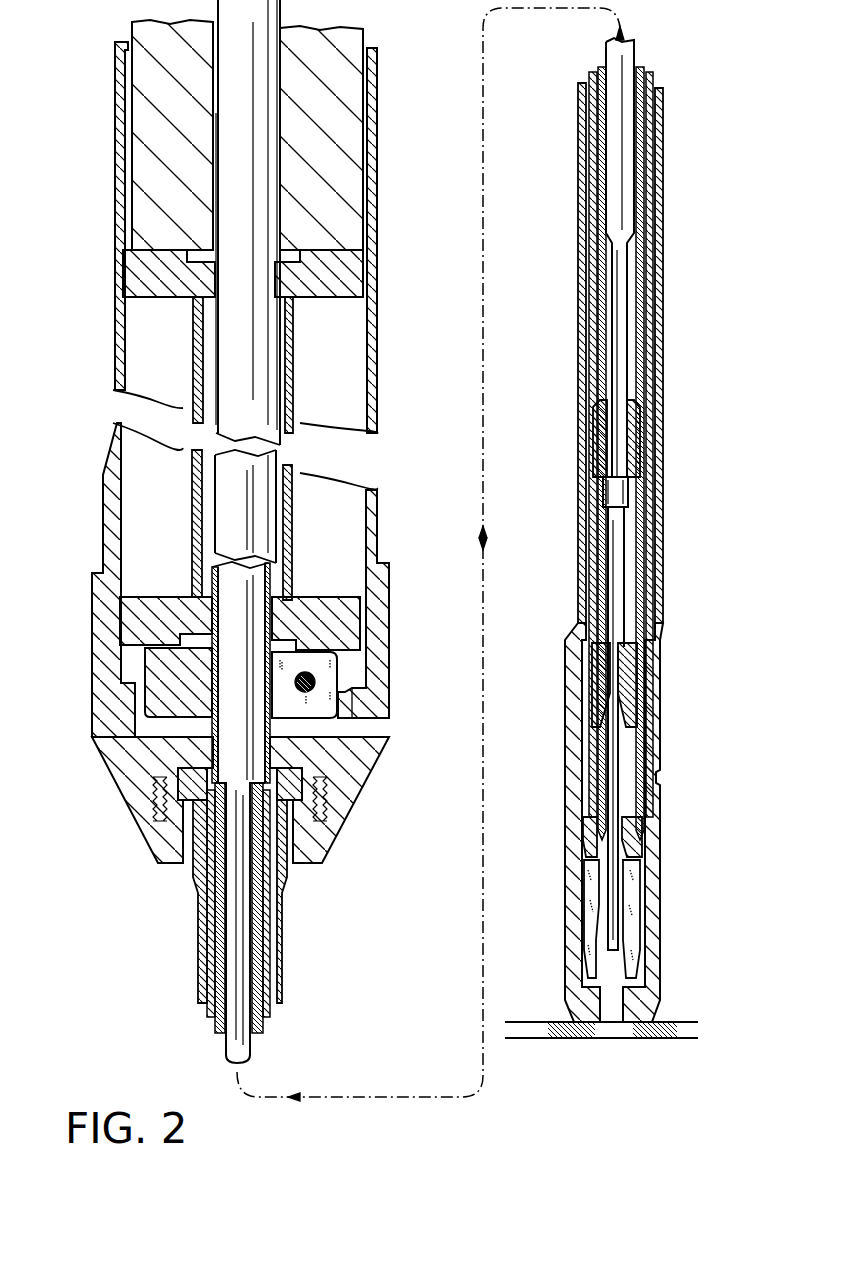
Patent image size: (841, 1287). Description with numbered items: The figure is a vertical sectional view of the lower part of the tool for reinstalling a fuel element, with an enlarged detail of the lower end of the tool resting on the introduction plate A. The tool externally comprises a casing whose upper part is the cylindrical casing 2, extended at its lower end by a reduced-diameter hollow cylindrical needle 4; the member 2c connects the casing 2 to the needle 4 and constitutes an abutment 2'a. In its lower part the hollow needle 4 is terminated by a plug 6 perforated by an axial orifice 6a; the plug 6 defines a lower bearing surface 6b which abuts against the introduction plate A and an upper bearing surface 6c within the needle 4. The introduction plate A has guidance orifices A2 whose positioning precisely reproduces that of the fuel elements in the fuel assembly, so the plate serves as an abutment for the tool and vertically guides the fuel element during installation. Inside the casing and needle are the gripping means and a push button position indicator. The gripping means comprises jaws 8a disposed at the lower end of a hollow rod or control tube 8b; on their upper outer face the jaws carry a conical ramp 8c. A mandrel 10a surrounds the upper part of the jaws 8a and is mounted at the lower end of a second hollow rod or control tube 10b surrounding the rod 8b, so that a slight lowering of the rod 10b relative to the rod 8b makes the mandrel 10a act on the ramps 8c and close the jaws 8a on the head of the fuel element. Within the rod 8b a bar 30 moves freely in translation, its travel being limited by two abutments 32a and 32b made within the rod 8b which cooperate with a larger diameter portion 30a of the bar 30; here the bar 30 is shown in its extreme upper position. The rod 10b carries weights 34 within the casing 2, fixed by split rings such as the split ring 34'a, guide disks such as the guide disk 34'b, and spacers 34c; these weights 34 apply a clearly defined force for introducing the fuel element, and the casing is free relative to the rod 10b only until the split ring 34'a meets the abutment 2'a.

The cylindrical casing 2 is at (257, 389).
The abutment 2'a is at (213, 791).
The connecting member 2c is at (133, 777).
The hollow cylindrical needle 4 is at (277, 973).
The plug 6 is at (650, 940).
The axial orifice 6a is at (612, 998).
The lower bearing surface 6b is at (638, 1042).
The upper bearing surface 6c is at (640, 978).
The jaws 8a is at (590, 953).
The hollow rod or control tube 8b is at (217, 1033).
The conical ramp 8c is at (637, 867).
The mandrel 10a is at (587, 828).
The second hollow rod or control tube 10b is at (593, 155).
The bar 30 is at (232, 927).
The larger diameter portion 30a is at (625, 490).
The abutment 32a is at (603, 637).
The abutment 32b is at (603, 498).
The weights 34 is at (278, 135).
The spacers 34c is at (320, 350).
The split ring 34'a is at (188, 669).
The guide disk 34'b is at (200, 577).
The introduction plate A is at (548, 1037).
The guidance orifices A2 is at (598, 1040).